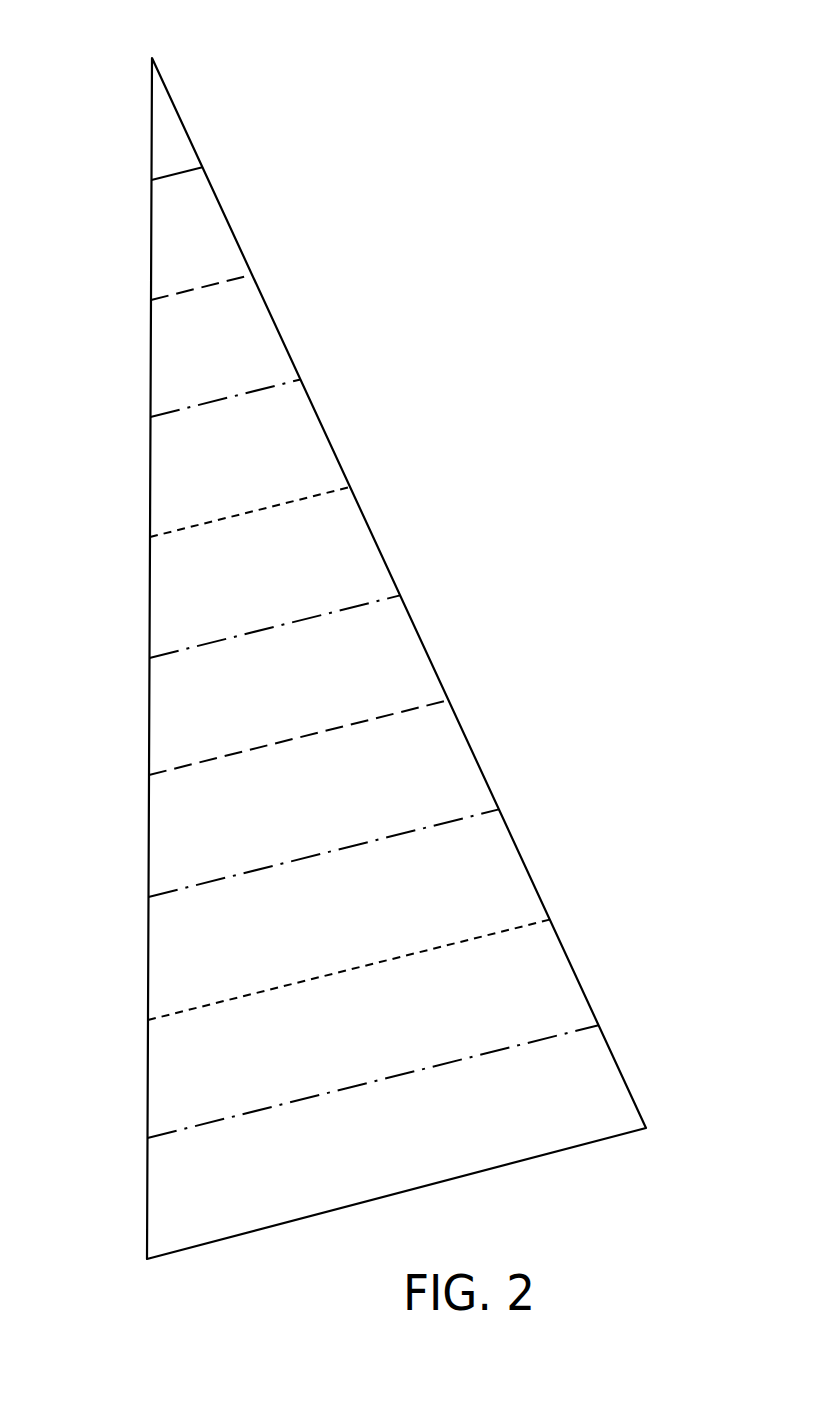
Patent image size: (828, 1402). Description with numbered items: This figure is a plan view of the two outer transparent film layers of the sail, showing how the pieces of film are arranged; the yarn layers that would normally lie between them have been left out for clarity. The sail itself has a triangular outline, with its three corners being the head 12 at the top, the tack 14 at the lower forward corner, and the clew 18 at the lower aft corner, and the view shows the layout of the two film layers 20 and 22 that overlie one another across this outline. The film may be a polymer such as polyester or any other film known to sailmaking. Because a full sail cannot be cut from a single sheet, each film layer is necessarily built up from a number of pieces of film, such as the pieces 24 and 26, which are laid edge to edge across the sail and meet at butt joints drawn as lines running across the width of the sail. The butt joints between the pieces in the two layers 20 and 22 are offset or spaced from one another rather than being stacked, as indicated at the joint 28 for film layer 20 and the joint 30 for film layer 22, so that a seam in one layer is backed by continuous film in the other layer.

The head 12 is at (152, 58).
The tack 14 is at (147, 1259).
The clew 18 is at (646, 1128).
The film layer 20 is at (565, 1088).
The film layer 22 is at (522, 1005).
The film piece 24 is at (505, 907).
The film piece 26 is at (448, 757).
The butt joint 28 is at (402, 832).
The butt joint 30 is at (395, 712).